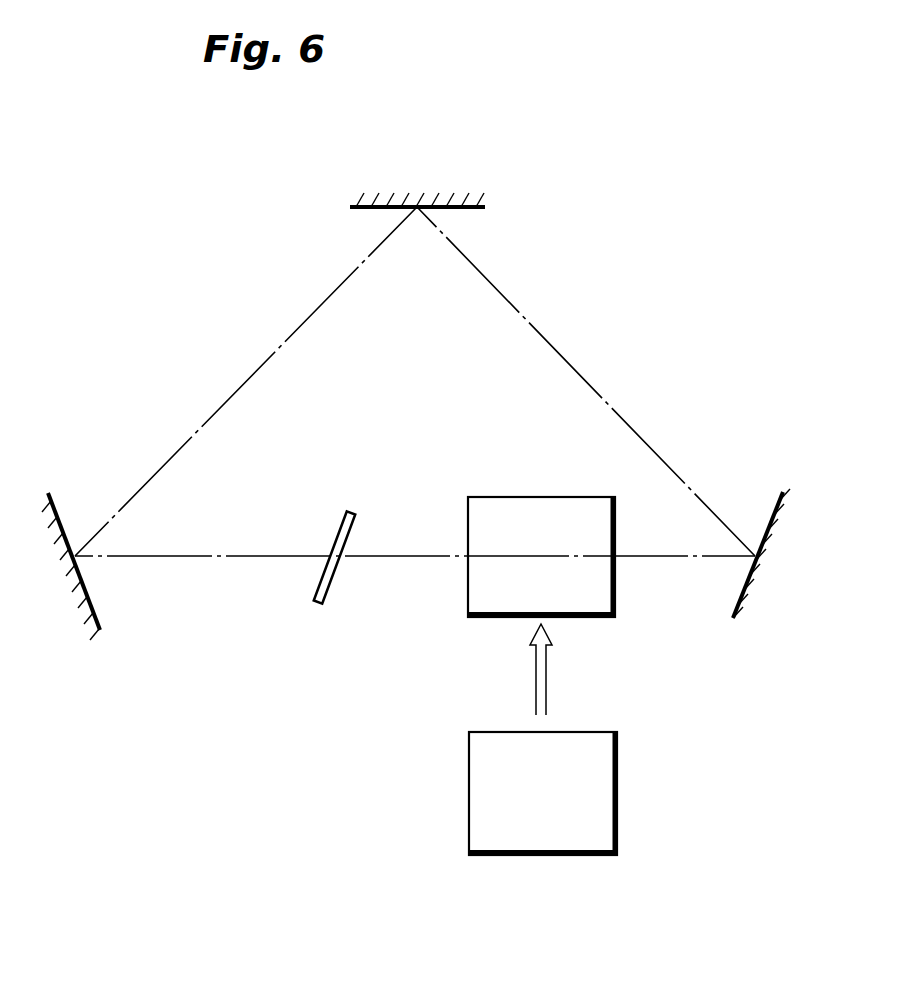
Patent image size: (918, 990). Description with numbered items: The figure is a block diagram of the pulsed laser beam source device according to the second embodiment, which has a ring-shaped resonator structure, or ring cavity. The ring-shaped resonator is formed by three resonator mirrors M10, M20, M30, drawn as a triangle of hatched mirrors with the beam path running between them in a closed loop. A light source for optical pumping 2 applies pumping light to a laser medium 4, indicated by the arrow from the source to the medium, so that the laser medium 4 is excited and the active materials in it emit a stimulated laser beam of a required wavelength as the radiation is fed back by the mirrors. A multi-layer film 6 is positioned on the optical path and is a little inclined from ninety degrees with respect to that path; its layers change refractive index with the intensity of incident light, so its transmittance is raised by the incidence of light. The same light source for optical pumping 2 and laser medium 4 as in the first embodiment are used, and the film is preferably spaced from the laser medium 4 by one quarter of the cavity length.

The light source for optical pumping 2 is at (469, 794).
The laser medium 4 is at (535, 497).
The multi-layer film 6 is at (343, 513).
The resonator mirror M10 is at (95, 636).
The resonator mirror M20 is at (740, 622).
The resonator mirror M30 is at (455, 203).